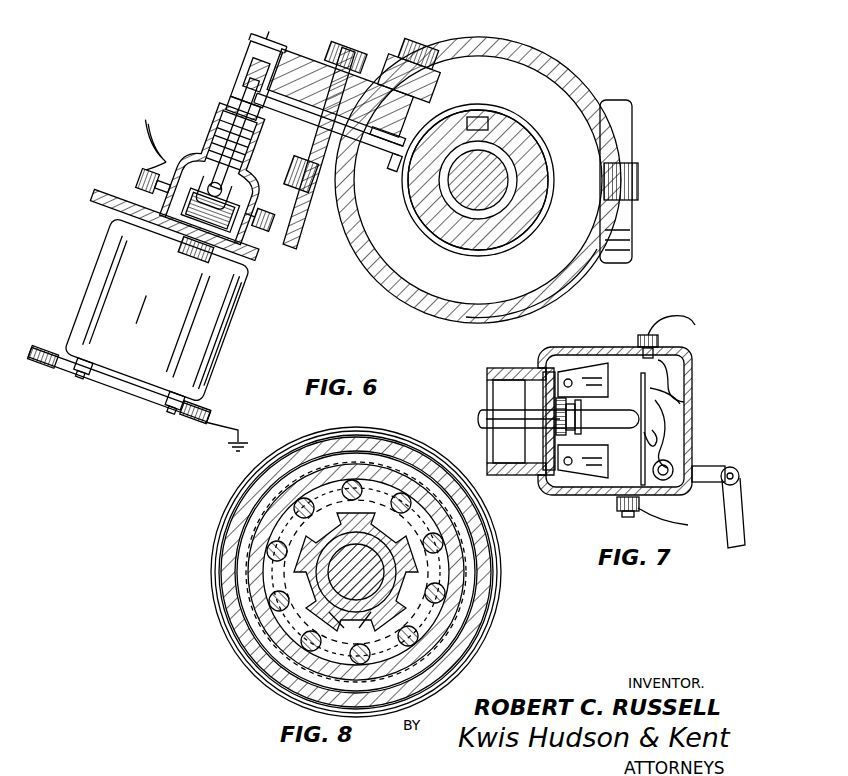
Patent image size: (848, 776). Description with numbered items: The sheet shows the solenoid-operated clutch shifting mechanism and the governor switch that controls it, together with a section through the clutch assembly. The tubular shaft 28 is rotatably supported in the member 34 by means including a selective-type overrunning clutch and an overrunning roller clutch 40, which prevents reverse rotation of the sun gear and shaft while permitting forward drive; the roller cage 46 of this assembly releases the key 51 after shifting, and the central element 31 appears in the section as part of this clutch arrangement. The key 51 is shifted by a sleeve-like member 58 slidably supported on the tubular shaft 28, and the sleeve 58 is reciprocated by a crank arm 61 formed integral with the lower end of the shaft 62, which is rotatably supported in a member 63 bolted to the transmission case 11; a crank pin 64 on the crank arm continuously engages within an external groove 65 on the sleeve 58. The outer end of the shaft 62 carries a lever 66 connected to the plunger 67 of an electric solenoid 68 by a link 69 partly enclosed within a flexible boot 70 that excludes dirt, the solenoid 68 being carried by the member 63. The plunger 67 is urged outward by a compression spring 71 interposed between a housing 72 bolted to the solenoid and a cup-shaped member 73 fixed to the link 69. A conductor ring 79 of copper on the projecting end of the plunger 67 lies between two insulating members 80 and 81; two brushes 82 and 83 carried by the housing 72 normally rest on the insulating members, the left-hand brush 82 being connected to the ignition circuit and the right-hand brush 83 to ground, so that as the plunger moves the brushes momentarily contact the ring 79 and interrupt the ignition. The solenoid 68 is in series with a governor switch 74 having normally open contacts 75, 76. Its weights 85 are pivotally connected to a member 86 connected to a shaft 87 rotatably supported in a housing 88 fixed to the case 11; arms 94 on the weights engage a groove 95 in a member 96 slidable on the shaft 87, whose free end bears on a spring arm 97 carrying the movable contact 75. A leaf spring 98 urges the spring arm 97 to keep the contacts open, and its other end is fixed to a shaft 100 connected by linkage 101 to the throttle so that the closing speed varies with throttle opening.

In FIG. 6, the transmission case 11 is at (592, 72).
In FIG. 8, the transmission case 11 is at (242, 518).
In FIG. 6, the tubular shaft 28 is at (520, 216).
In FIG. 8, the tubular shaft 28 is at (266, 638).
In FIG. 6, the shaft 31 is at (468, 200).
In FIG. 8, the shaft 31 is at (354, 566).
In FIG. 8, the member 34 is at (250, 596).
In FIG. 8, the overrunning roller clutch 40 is at (268, 552).
In FIG. 8, the roller cage 46 is at (350, 627).
In FIG. 6, the key 51 is at (482, 118).
In FIG. 6, the sleeve-like member 58 is at (546, 178).
In FIG. 6, the crank arm 61 is at (390, 141).
In FIG. 6, the shaft 62 is at (392, 116).
In FIG. 6, the member 63 is at (308, 64).
In FIG. 6, the crank pin 64 is at (403, 161).
In FIG. 6, the external groove 65 is at (540, 140).
In FIG. 6, the lever 66 is at (262, 58).
In FIG. 6, the plunger 67 is at (165, 232).
In FIG. 6, the electric solenoid 68 is at (215, 325).
In FIG. 6, the link 69 is at (242, 86).
In FIG. 6, the flexible boot 70 is at (252, 157).
In FIG. 6, the compression spring 71 is at (212, 122).
In FIG. 6, the housing 72 is at (292, 186).
In FIG. 6, the cup-shaped member 73 is at (256, 114).
In FIG. 7, the governor switch 74 is at (580, 492).
In FIG. 7, the movable contact 75 is at (684, 402).
In FIG. 7, the contact 76 is at (688, 380).
In FIG. 6, the conductor ring 79 is at (180, 248).
In FIG. 6, the insulating member 80 is at (205, 190).
In FIG. 6, the insulating member 81 is at (122, 226).
In FIG. 6, the left-hand brush 82 is at (138, 196).
In FIG. 6, the right-hand brush 83 is at (212, 254).
In FIG. 7, the weights 85 is at (608, 382).
In FIG. 7, the member 86 is at (500, 440).
In FIG. 7, the shaft 87 is at (481, 415).
In FIG. 7, the housing 88 is at (514, 478).
In FIG. 7, the arms 94 is at (578, 432).
In FIG. 7, the groove 95 is at (576, 413).
In FIG. 7, the member 96 is at (620, 434).
In FIG. 7, the spring arm 97 is at (648, 412).
In FIG. 7, the leaf spring 98 is at (664, 440).
In FIG. 7, the shaft 100 is at (672, 500).
In FIG. 7, the linkage 101 is at (728, 536).